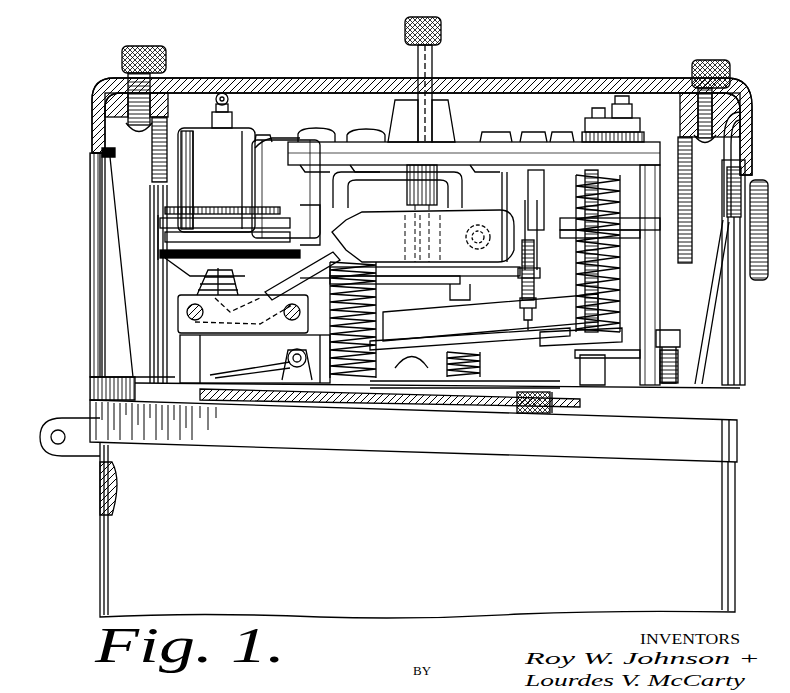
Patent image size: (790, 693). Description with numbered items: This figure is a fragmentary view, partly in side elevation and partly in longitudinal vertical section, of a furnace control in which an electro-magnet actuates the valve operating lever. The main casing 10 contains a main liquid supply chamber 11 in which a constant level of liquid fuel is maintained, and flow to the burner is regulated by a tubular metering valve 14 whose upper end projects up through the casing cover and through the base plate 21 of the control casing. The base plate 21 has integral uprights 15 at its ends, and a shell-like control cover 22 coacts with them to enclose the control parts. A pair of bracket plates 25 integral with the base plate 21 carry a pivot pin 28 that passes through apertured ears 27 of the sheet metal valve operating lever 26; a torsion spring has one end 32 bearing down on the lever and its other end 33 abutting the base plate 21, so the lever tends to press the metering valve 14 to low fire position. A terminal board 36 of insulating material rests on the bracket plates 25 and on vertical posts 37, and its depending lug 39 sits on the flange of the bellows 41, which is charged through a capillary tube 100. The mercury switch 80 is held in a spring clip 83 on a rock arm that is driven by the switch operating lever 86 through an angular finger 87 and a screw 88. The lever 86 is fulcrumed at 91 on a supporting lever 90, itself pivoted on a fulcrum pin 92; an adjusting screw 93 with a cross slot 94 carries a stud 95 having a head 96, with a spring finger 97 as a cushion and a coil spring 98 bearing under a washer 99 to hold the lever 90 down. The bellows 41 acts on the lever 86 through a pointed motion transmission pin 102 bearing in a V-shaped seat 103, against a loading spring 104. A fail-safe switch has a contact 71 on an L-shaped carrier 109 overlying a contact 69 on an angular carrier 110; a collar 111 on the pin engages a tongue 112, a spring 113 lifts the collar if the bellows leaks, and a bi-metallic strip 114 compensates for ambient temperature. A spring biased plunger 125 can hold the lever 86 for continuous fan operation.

The main casing 10 is at (95, 542).
The main liquid supply chamber 11 is at (113, 490).
The tubular metering valve 14 is at (532, 413).
The uprights 15 is at (93, 280).
The base plate 21 is at (272, 402).
The control cover 22 is at (545, 92).
The bracket plates 25 is at (240, 348).
The valve operating lever 26 is at (445, 388).
The ears 27 is at (250, 380).
The pivot pin 28 is at (298, 368).
The spring end 32 is at (412, 357).
The spring end 33 is at (232, 374).
The terminal board 36 is at (474, 157).
The vertical posts 37 is at (646, 205).
The lug 39 is at (318, 146).
The bellows 41 is at (232, 156).
The contact 69 is at (170, 266).
The contact 71 is at (160, 252).
The mercury switch 80 is at (384, 233).
The spring clip 83 is at (425, 212).
The switch operating lever 86 is at (392, 275).
The angular finger 87 is at (540, 255).
The screw 88 is at (536, 303).
The supporting lever 90 is at (484, 322).
The fulcrum 91 is at (178, 313).
The fulcrum pin 92 is at (320, 275).
The adjusting screw 93 is at (628, 100).
The cross slot 94 is at (600, 108).
The stud 95 is at (622, 300).
The head 96 is at (600, 370).
The spring finger 97 is at (585, 360).
The coil spring 98 is at (622, 318).
The washer 99 is at (672, 246).
The capillary tube 100 is at (230, 108).
The motion transmission pin 102 is at (262, 300).
The V-shaped seat 103 is at (254, 325).
The loading spring 104 is at (345, 378).
The L-shaped spring conducting member 109 is at (178, 230).
The angular conducting member 110 is at (290, 248).
The collar 111 is at (262, 162).
The tongue 112 is at (185, 235).
The spring 113 is at (232, 280).
The bi-metallic strip 114 is at (250, 240).
The spring biased plunger 125 is at (432, 76).